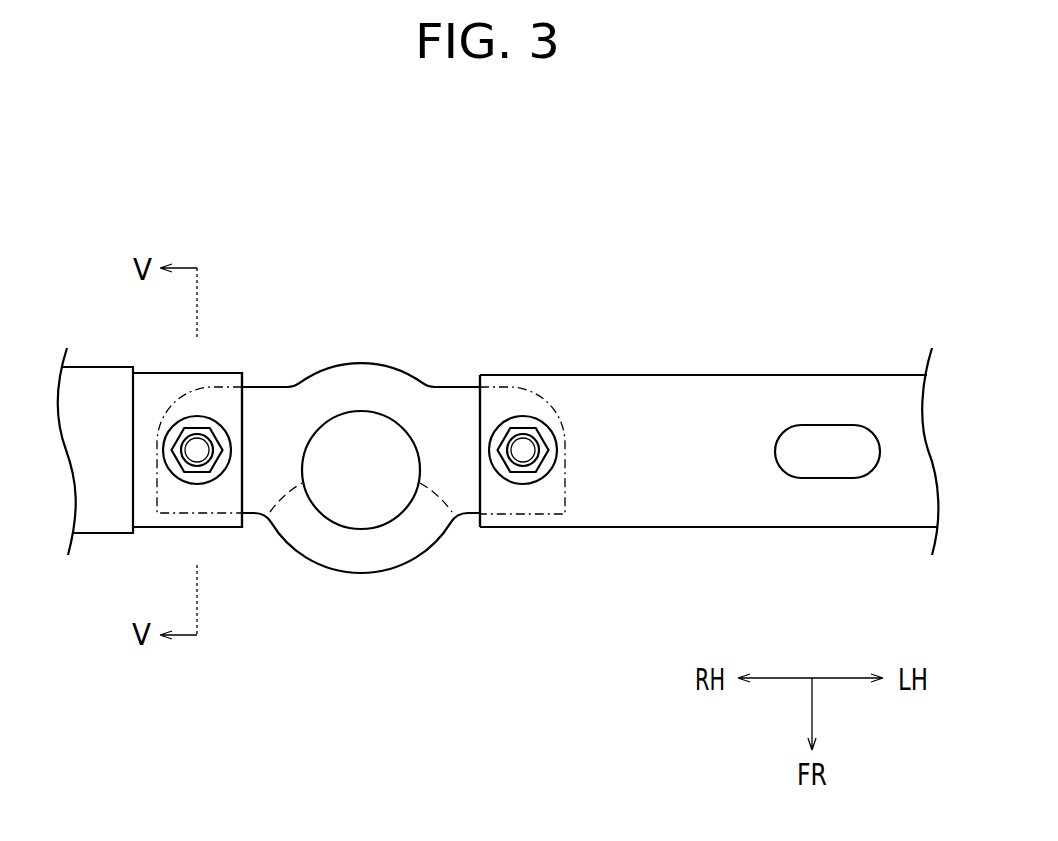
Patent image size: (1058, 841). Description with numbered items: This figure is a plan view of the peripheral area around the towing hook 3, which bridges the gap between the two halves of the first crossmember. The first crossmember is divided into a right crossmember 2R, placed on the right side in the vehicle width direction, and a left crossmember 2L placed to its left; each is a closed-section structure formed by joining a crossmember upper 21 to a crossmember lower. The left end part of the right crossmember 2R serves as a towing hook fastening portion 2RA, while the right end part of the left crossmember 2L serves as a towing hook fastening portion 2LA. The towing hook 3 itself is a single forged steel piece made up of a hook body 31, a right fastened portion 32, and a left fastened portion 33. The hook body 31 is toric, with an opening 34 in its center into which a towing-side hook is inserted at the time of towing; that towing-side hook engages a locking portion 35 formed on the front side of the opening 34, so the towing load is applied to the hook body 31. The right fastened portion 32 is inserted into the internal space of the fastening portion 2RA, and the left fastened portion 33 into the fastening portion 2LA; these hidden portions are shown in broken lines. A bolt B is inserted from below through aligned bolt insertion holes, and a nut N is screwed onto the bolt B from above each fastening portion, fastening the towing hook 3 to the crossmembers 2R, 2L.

The towing hook 3 is at (361, 446).
The crossmember upper 21 is at (157, 397).
The right crossmember 2R is at (227, 540).
The left crossmember 2L is at (737, 540).
The towing hook fastening portion 2RA is at (197, 503).
The towing hook fastening portion 2LA is at (523, 502).
The hook body 31 is at (395, 395).
The right fastened portion 32 is at (222, 397).
The left fastened portion 33 is at (507, 397).
The opening 34 is at (367, 488).
The locking portion 35 is at (368, 547).
The nut N is at (177, 462).
The bolt B is at (198, 450).